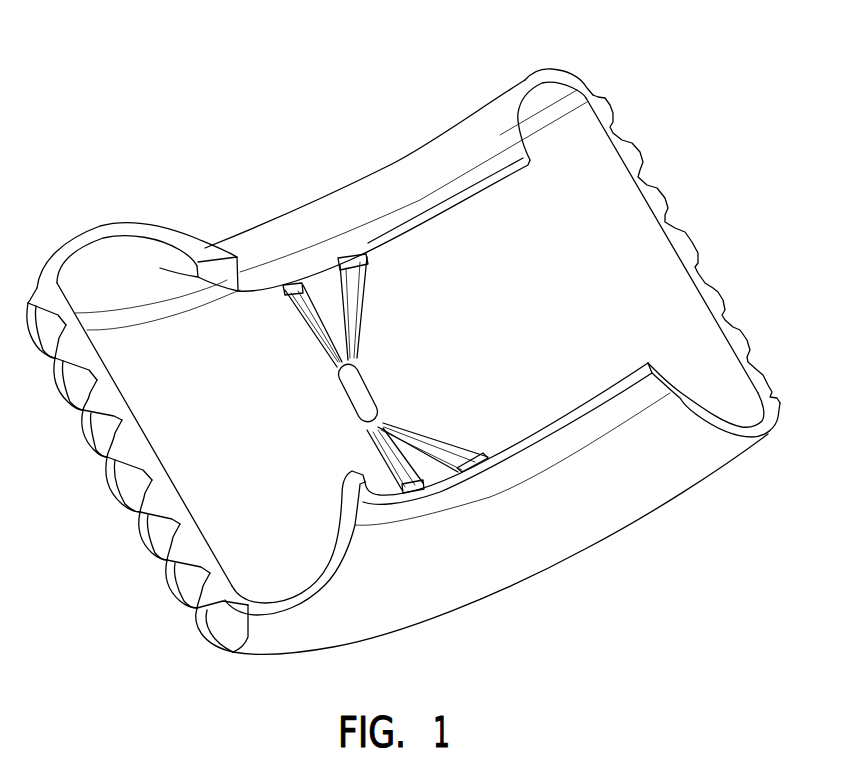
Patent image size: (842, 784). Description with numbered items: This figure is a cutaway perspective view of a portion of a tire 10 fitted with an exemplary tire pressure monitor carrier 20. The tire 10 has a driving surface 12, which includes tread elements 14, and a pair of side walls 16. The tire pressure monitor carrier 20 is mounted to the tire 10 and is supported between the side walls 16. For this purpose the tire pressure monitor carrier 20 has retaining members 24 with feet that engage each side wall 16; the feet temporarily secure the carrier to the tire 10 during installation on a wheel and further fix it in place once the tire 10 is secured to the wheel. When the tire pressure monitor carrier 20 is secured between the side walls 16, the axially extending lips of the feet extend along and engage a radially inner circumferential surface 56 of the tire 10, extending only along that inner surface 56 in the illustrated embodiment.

The tire 10 is at (240, 188).
The driving surface 12 is at (110, 512).
The tread elements 14 is at (87, 420).
The side walls 16 is at (355, 200).
The tire pressure monitor carrier 20 is at (372, 358).
The retaining members 24 is at (262, 308).
The radially inner circumferential surface 56 is at (473, 193).